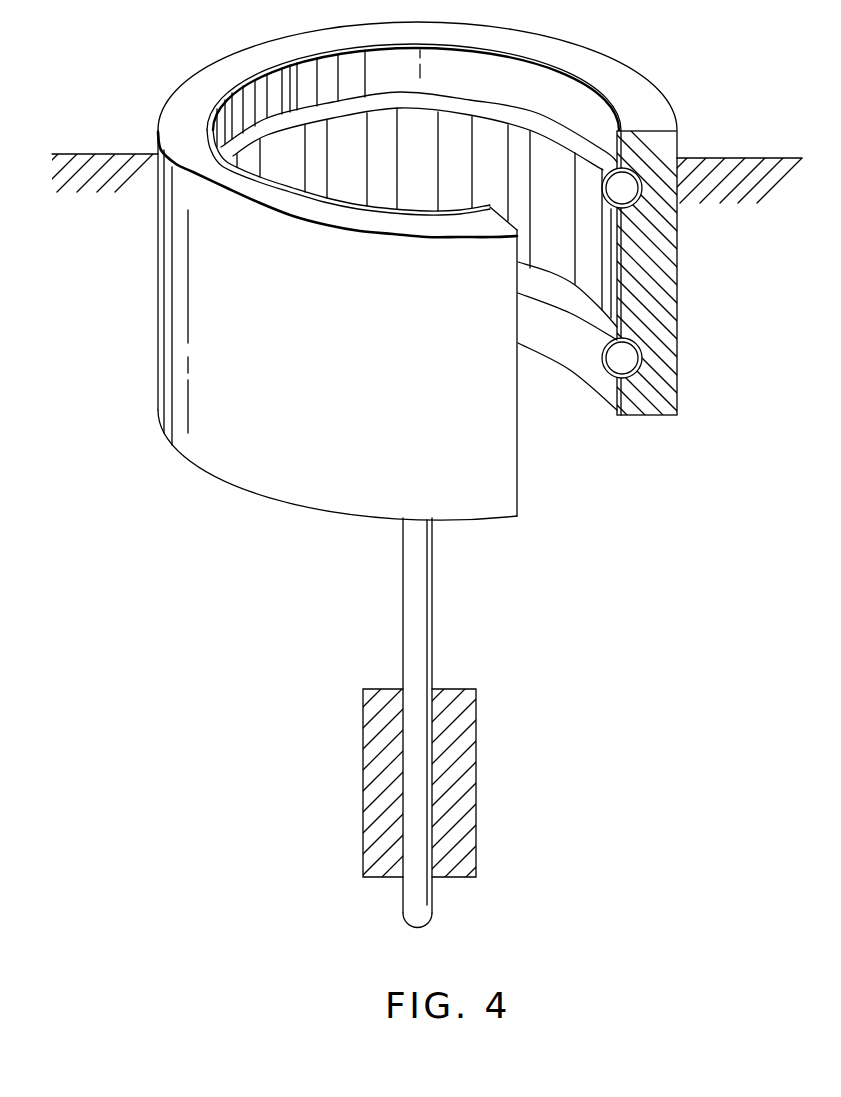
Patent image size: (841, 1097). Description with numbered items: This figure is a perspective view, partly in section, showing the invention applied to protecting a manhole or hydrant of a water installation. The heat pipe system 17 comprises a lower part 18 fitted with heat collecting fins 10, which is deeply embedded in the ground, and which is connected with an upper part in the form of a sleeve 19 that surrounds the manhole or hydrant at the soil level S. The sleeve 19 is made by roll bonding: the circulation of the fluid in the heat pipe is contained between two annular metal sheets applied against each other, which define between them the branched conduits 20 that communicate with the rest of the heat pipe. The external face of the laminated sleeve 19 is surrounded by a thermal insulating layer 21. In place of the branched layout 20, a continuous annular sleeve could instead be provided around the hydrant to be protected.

The soil level S is at (728, 158).
The heat collecting fins 10 is at (460, 782).
The heat pipe system 17 is at (415, 615).
The lower part 18 is at (418, 902).
The sleeve 19 is at (539, 352).
The branched conduits 20 is at (317, 130).
The thermal insulating layer 21 is at (668, 312).